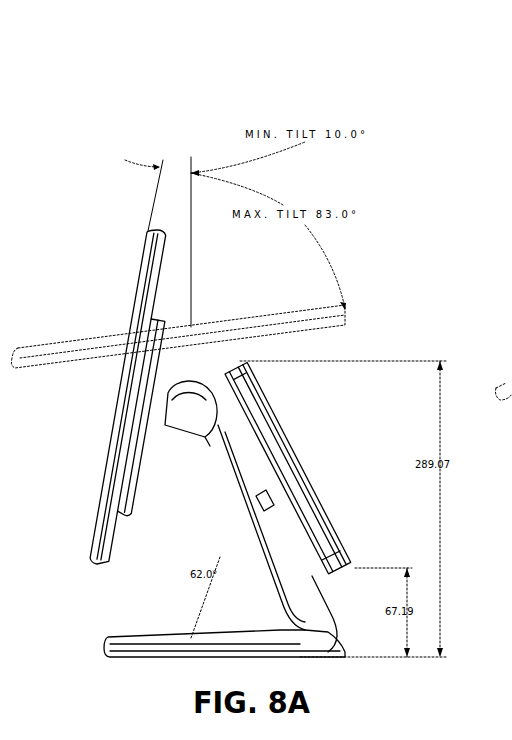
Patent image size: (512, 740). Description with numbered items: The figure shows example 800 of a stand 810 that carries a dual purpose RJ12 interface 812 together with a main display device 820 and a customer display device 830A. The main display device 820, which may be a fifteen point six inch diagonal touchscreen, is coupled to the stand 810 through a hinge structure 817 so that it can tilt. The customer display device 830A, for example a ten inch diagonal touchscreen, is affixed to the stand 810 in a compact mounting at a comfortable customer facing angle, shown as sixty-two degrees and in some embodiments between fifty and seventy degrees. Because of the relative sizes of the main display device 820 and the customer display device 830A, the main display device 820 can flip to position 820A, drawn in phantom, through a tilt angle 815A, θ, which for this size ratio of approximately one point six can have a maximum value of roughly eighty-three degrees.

The example 800 is at (322, 122).
The tilt angle 815A is at (410, 252).
The main display device 820 is at (178, 300).
The position 820A is at (323, 317).
The hinge structure 817 is at (215, 443).
The customer display device 830A is at (300, 420).
The dual purpose RJ12 interface 812 is at (262, 505).
The stand 810 is at (333, 620).